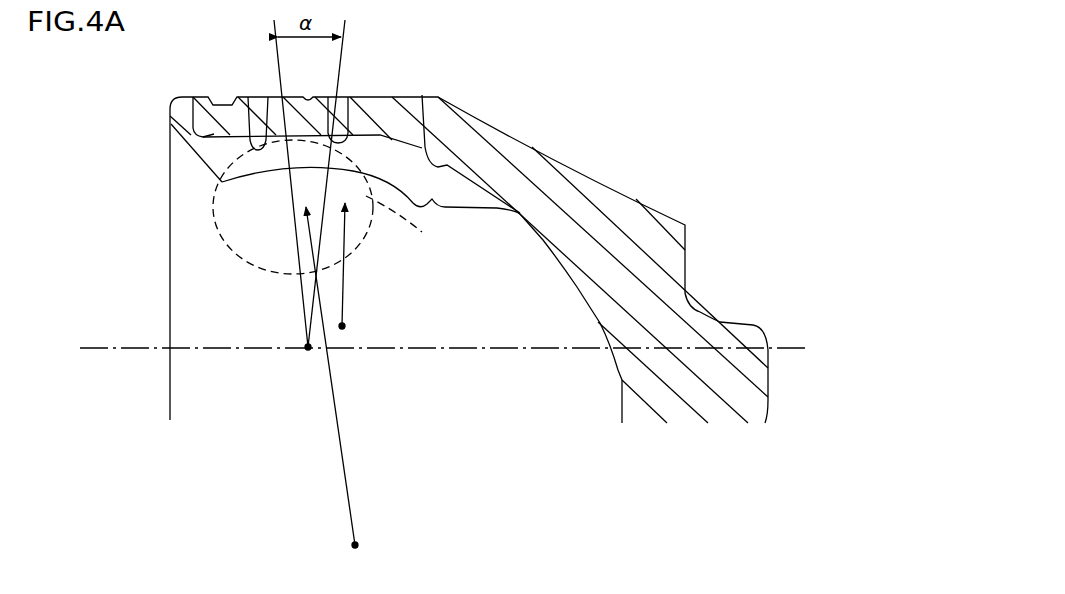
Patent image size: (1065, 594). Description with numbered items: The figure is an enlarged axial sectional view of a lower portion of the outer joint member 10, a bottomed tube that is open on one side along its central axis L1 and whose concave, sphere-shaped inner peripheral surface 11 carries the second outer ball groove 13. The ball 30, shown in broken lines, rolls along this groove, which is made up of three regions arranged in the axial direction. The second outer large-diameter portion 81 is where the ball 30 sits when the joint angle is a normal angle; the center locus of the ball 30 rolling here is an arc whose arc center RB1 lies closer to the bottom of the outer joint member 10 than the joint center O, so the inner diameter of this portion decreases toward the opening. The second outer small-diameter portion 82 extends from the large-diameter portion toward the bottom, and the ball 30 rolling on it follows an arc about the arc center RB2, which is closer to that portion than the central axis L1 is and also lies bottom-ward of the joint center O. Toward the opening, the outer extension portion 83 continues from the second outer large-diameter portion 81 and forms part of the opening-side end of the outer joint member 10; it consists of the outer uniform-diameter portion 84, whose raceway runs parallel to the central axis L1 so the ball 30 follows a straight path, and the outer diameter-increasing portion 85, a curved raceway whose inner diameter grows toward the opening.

The outer joint member 10 is at (660, 143).
The inner peripheral surface 11 is at (432, 198).
The second outer ball groove 13 is at (227, 151).
The ball 30 is at (270, 275).
The second outer large-diameter portion 81 is at (348, 97).
The second outer small-diameter portion 82 is at (422, 95).
The outer extension portion 83 is at (286, 83).
The outer uniform-diameter portion 84 is at (242, 103).
The outer diameter-increasing portion 85 is at (214, 133).
The central axis L1 is at (101, 350).
The joint center O is at (306, 350).
The arc center RB1 is at (358, 545).
The arc center RB2 is at (345, 326).